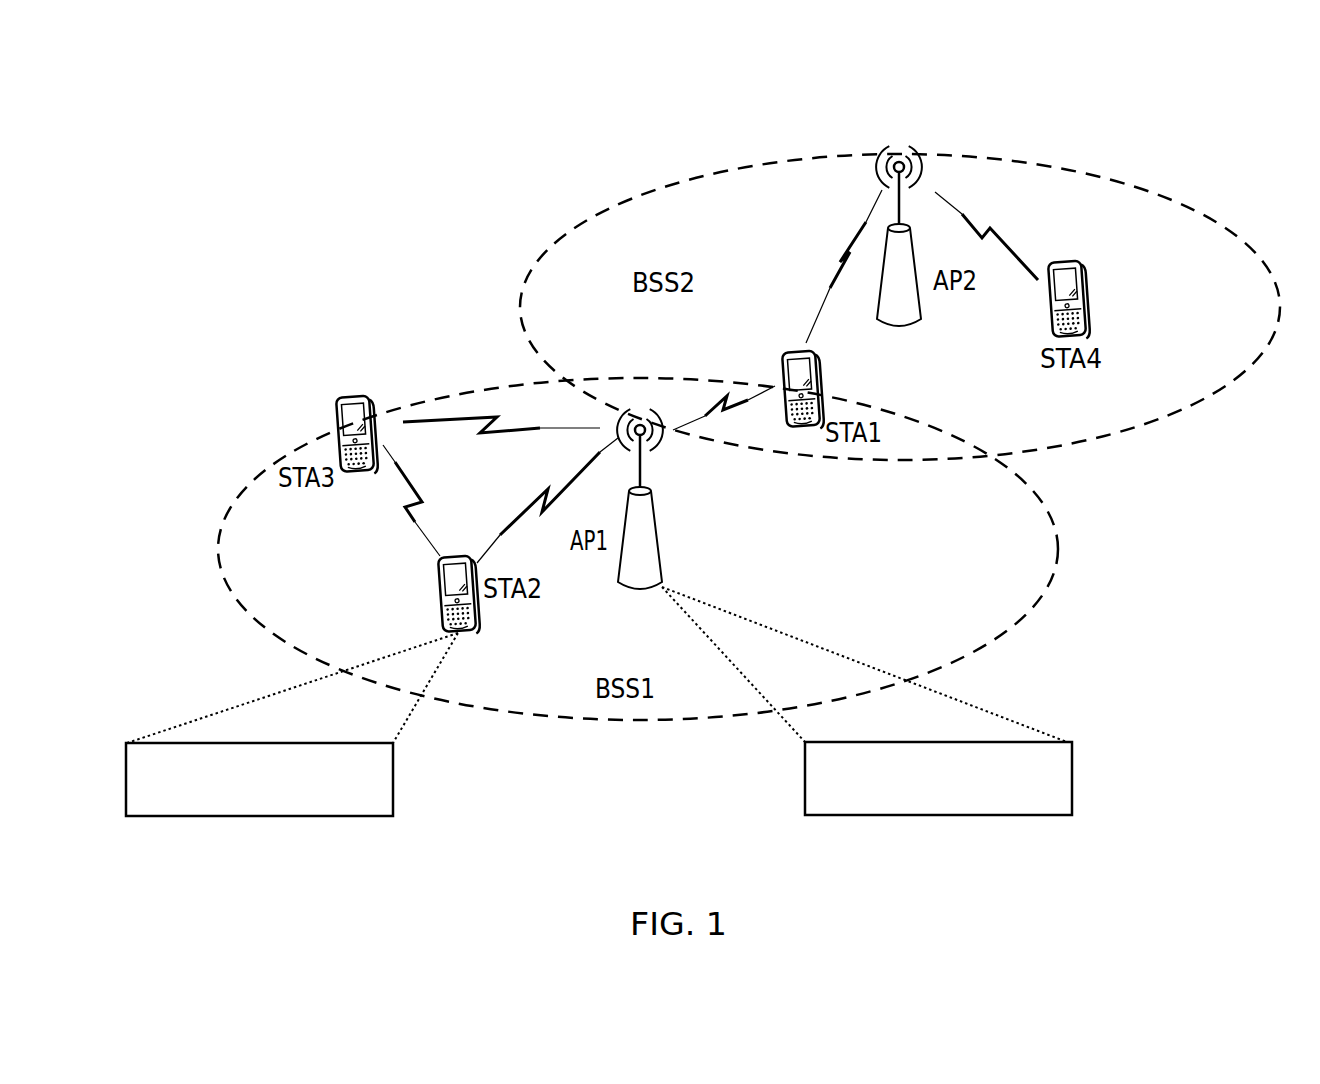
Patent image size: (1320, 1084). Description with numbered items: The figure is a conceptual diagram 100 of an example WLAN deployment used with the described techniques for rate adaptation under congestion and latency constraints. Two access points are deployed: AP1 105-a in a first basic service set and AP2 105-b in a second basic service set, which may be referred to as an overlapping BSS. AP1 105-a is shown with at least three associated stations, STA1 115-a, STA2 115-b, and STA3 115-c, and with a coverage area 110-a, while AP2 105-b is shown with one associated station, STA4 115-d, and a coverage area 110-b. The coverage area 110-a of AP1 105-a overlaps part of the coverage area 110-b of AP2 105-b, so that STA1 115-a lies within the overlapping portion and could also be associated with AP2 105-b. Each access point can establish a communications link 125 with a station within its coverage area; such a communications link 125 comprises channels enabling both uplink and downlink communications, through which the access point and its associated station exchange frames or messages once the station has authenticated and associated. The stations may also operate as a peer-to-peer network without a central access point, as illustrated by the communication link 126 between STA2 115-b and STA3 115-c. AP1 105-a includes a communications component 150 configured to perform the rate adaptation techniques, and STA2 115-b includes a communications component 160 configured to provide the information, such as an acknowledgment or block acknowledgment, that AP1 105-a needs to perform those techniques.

The conceptual diagram 100 is at (272, 98).
The coverage area 110-a is at (225, 526).
The coverage area 110-b is at (1009, 161).
The AP1 105-a is at (624, 590).
The AP2 105-b is at (921, 322).
The STA1 115-a is at (784, 368).
The STA2 115-b is at (442, 604).
The STA3 115-c is at (341, 410).
The STA4 115-d is at (1084, 278).
The communications link 125 is at (980, 222).
The communication link 126 is at (402, 518).
The communications component 150 is at (1025, 808).
The communications component 160 is at (347, 808).